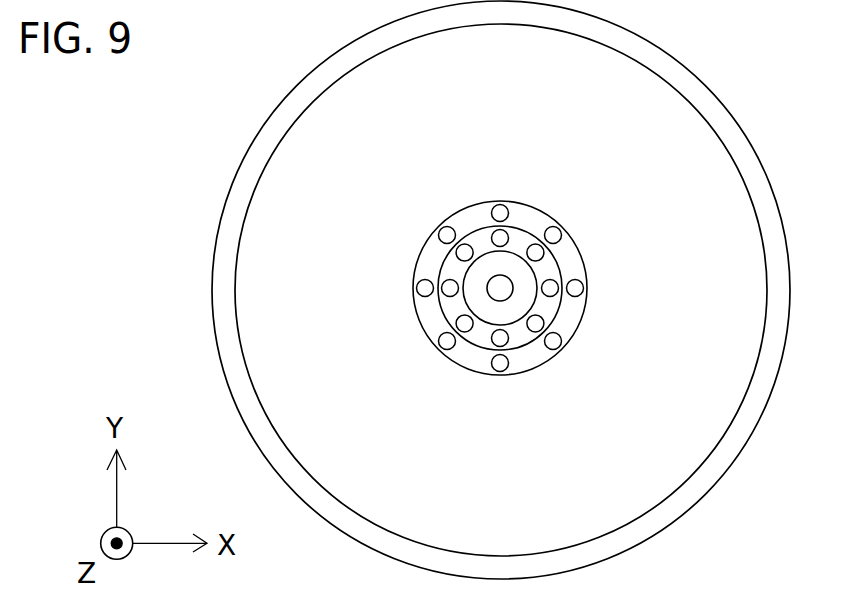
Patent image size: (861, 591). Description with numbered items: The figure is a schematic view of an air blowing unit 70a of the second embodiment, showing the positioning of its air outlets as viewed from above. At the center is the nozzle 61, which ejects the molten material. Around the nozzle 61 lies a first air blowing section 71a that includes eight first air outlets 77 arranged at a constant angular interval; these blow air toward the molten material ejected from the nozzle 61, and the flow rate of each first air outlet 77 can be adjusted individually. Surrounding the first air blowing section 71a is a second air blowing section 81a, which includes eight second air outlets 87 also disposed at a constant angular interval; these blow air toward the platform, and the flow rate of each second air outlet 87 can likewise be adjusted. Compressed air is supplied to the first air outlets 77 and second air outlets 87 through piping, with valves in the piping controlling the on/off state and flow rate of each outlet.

The air blowing unit 70a is at (745, 138).
The second air blowing section 81a is at (457, 223).
The first air blowing section 71a is at (483, 242).
The nozzle 61 is at (513, 286).
The first air outlets 77 is at (472, 224).
The second air outlets 87 is at (506, 203).